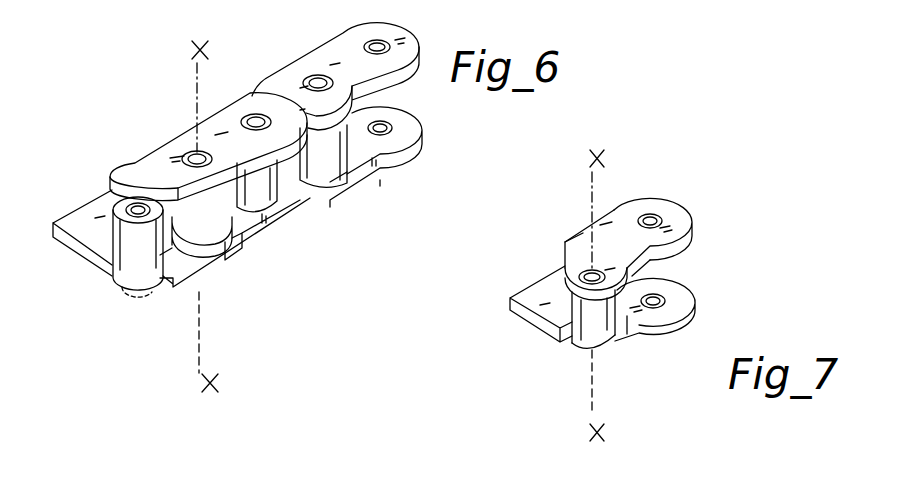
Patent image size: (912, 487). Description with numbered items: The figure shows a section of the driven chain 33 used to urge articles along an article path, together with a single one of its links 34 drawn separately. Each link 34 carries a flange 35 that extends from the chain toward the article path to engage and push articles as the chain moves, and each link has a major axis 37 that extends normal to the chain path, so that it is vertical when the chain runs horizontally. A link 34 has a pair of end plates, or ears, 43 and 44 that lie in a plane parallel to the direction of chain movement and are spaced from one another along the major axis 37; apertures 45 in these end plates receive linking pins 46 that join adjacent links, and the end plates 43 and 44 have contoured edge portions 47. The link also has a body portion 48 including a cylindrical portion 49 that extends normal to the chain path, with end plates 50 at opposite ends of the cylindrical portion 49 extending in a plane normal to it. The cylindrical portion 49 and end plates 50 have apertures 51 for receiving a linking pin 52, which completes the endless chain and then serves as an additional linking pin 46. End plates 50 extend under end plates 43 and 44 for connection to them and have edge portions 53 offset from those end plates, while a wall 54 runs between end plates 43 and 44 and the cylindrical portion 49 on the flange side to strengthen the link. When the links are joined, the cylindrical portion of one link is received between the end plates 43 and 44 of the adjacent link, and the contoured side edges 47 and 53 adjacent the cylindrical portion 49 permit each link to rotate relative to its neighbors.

In FIG. 6, the driven chain 33 is at (307, 63).
In FIG. 6, the link 34 is at (142, 156).
In FIG. 7, the link 34 is at (613, 228).
In FIG. 6, the flange 35 is at (93, 228).
In FIG. 7, the flange 35 is at (543, 297).
In FIG. 6, the major axis 37 is at (203, 349).
In FIG. 7, the major axis 37 is at (597, 393).
In FIG. 7, the end plate 43 is at (690, 292).
In FIG. 7, the end plate 44 is at (690, 212).
In FIG. 7, the aperture 45 is at (652, 218).
In FIG. 6, the linking pin 46 is at (305, 87).
In FIG. 7, the contoured edge portion 47 is at (578, 250).
In FIG. 7, the body portion 48 is at (580, 307).
In FIG. 7, the cylindrical portion 49 is at (593, 330).
In FIG. 7, the end plate 50 is at (563, 252).
In FIG. 7, the aperture 51 is at (588, 270).
In FIG. 6, the linking pin 52 is at (124, 303).
In FIG. 7, the edge portion 53 is at (655, 272).
In FIG. 7, the wall 54 is at (572, 265).